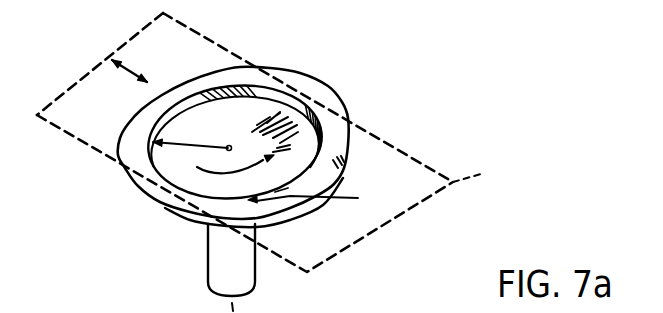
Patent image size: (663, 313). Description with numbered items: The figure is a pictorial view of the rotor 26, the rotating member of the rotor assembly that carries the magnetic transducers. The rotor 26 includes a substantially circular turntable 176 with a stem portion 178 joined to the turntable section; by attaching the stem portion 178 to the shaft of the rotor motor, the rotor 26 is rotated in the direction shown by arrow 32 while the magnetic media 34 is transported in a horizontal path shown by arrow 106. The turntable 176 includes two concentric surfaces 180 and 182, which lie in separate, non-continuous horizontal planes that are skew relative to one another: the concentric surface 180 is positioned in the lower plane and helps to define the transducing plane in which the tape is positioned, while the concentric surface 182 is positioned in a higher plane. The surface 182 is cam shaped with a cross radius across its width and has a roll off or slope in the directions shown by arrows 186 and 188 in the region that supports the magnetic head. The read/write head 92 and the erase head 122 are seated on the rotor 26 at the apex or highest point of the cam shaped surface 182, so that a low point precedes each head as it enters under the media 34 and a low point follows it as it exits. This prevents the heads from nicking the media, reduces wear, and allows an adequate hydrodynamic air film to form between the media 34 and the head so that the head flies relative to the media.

The rotor 26 is at (298, 224).
The arrow 32 is at (197, 167).
The magnetic media 34 is at (270, 100).
The read/write head 92 is at (332, 100).
The arrow 106 is at (132, 65).
The erase head 122 is at (342, 107).
The turntable 176 is at (352, 110).
The stem portion 178 is at (200, 274).
The concentric surface 180 is at (186, 144).
The concentric surface 182 is at (167, 112).
The arrow 186 is at (240, 80).
The arrow 188 is at (317, 196).